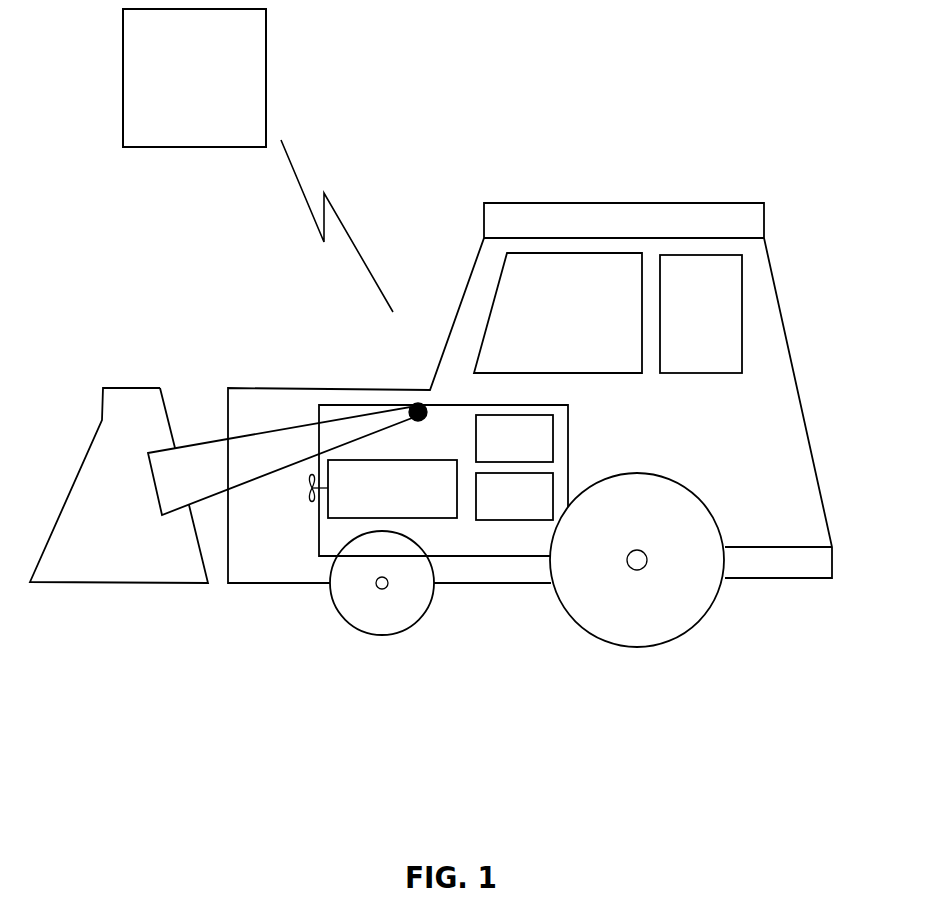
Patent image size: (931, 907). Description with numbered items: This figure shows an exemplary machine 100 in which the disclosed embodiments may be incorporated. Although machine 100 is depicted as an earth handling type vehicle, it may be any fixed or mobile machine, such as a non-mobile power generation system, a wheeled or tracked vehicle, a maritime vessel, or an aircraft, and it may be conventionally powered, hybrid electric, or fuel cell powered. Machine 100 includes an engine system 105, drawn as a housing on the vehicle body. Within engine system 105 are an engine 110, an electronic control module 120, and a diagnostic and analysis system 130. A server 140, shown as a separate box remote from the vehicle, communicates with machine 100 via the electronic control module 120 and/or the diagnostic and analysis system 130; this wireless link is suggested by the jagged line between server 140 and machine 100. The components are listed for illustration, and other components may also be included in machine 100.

The machine 100 is at (748, 279).
The engine system 105 is at (487, 549).
The engine 110 is at (404, 507).
The electronic control module (ECM) 120 is at (523, 507).
The diagnostic and analysis system 130 is at (523, 447).
The server 140 is at (212, 89).